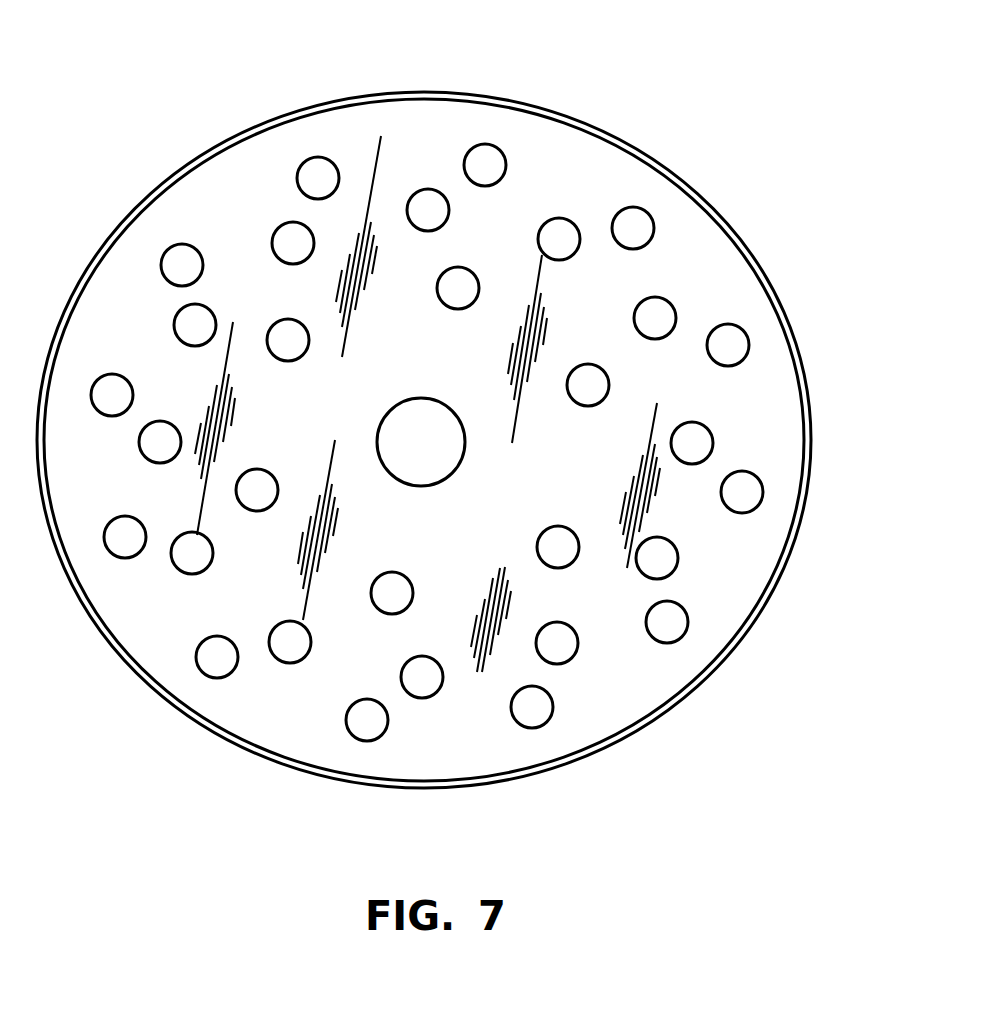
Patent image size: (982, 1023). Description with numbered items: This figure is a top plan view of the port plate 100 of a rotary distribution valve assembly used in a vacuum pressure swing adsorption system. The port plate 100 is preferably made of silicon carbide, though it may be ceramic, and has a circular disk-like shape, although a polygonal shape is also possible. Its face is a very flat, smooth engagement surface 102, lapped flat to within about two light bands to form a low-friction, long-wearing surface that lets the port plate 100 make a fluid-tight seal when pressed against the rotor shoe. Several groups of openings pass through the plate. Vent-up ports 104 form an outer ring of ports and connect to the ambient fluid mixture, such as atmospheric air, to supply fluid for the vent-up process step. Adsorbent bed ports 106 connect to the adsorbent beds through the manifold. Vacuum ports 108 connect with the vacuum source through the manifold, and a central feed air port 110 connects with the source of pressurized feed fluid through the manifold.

The port plate 100 is at (483, 98).
The engagement surface 102 is at (696, 259).
The vent-up ports 104 is at (750, 337).
The adsorbent bed ports 106 is at (713, 432).
The vacuum ports 108 is at (540, 533).
The feed air port 110 is at (462, 400).